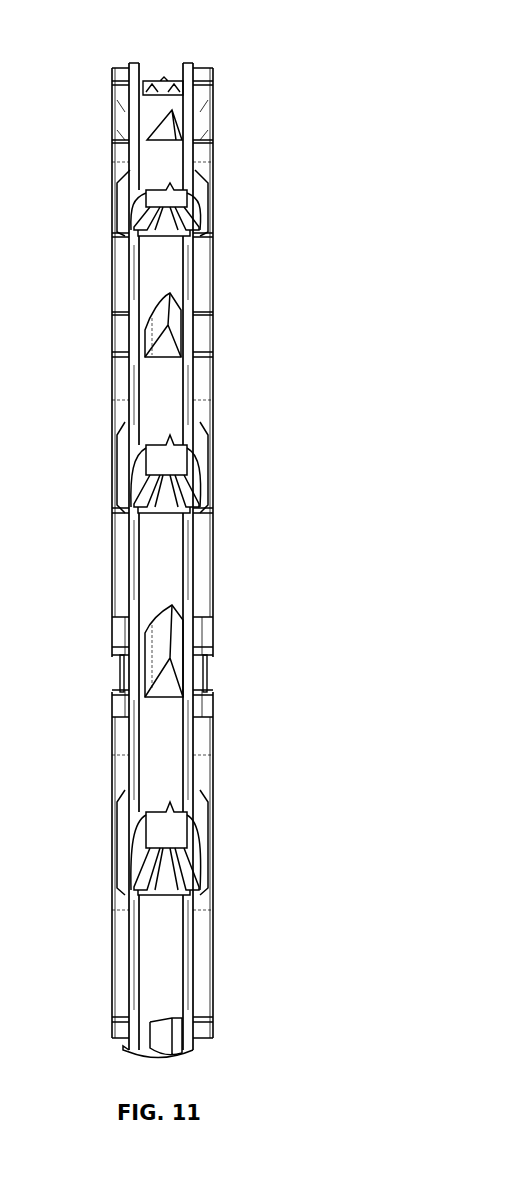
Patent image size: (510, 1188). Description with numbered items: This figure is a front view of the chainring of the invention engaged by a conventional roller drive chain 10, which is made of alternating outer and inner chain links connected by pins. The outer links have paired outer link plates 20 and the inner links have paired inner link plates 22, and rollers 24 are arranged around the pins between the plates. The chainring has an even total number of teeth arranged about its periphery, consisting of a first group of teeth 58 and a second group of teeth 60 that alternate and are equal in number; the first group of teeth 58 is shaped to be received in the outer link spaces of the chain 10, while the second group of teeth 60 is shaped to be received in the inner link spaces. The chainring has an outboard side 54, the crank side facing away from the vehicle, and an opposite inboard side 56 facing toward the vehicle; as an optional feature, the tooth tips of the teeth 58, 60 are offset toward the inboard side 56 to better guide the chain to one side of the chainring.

The drive chain 10 is at (274, 590).
The outer link plates 20 is at (203, 632).
The inner link plates 22 is at (202, 677).
The rollers 24 is at (167, 535).
The outboard side 54 is at (93, 562).
The inboard side 56 is at (252, 541).
The first group of teeth 58 is at (178, 458).
The second group of teeth 60 is at (172, 307).